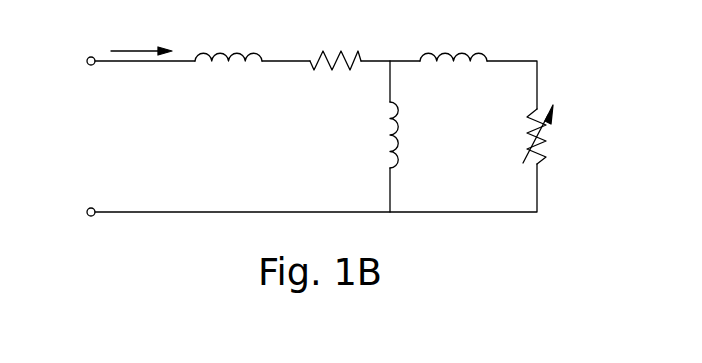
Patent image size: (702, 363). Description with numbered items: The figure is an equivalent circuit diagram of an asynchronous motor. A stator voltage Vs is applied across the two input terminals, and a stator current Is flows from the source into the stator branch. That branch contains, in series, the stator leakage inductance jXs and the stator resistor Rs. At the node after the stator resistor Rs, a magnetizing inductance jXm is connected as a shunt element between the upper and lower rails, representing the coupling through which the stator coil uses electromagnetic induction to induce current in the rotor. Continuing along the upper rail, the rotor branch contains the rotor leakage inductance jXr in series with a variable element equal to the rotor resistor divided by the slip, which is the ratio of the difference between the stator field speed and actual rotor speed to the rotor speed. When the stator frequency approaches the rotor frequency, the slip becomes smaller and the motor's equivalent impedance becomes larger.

The stator voltage Vs is at (91, 137).
The stator current Is is at (141, 36).
The stator leakage inductance jXs is at (228, 39).
The stator resistor Rs is at (335, 43).
The rotor leakage inductance jXr is at (453, 39).
The magnetizing inductance jXm is at (365, 135).